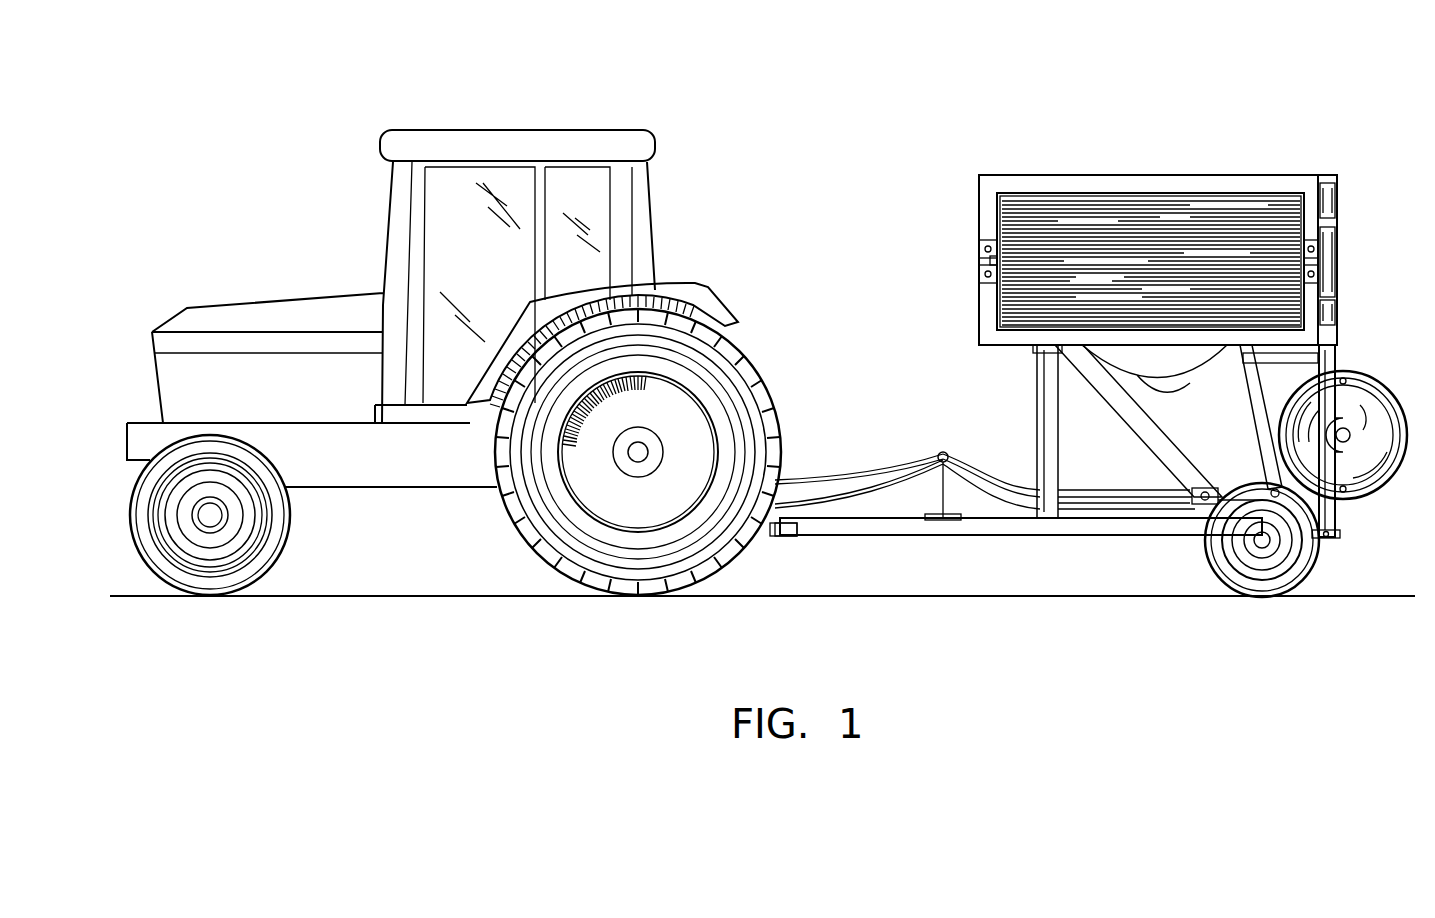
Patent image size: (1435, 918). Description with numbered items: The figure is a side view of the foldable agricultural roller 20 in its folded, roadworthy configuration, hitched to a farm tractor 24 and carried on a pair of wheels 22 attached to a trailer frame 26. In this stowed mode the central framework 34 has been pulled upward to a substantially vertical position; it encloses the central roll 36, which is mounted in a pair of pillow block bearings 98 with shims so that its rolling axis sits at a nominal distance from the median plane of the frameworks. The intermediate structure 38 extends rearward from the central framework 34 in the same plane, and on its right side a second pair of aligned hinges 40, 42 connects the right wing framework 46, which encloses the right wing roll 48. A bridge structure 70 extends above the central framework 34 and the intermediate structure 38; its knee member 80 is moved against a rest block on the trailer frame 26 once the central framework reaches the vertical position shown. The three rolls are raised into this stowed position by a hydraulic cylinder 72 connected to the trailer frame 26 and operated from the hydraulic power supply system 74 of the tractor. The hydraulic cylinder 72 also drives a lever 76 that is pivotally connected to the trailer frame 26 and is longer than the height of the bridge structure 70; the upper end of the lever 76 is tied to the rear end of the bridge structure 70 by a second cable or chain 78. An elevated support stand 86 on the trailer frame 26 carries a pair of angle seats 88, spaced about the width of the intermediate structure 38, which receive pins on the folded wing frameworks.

The foldable agricultural roller 20 is at (1300, 118).
The wheels 22 is at (1215, 570).
The farm tractor 24 is at (497, 128).
The trailer frame 26 is at (990, 528).
The central framework 34 is at (1332, 405).
The central roll 36 is at (1380, 490).
The intermediate structure 38 is at (1340, 275).
The hinge of second pair 40 is at (1340, 200).
The hinge of second pair 42 is at (1340, 313).
The right wing framework 46 is at (1148, 183).
The right wing roll 48 is at (1062, 207).
The bridge structure 70 is at (1248, 395).
The hydraulic cylinder 72 is at (1104, 505).
The hydraulic power supply system 74 is at (832, 482).
The lever 76 is at (1200, 475).
The second cable or chain 78 is at (1178, 383).
The knee member 80 is at (1342, 522).
The elevated support stand 86 is at (1040, 422).
The angle seats 88 is at (1043, 352).
The pillow block bearings 98 is at (980, 262).